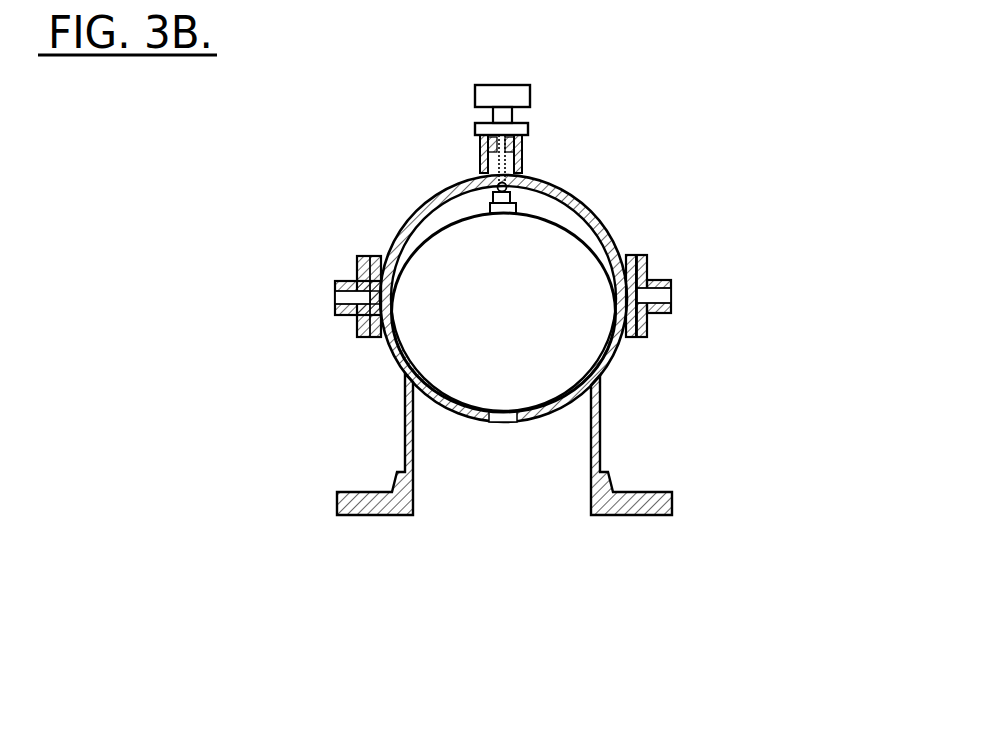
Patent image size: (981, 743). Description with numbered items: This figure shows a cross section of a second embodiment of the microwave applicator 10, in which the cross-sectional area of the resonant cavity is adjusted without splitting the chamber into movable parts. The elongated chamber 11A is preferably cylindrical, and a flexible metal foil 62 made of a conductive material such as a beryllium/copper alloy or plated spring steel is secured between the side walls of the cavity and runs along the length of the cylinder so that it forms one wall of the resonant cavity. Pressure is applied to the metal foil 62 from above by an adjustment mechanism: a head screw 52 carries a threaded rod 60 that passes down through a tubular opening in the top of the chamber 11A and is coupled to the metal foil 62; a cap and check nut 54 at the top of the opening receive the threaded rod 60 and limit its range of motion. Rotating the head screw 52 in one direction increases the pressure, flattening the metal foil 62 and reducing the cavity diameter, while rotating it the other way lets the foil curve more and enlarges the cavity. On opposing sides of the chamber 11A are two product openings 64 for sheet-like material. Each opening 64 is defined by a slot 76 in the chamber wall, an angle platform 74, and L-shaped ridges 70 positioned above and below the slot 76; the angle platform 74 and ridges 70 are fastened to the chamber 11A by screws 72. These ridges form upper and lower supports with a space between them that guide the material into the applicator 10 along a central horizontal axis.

The applicator 10 is at (577, 64).
The elongated chamber 11A is at (420, 197).
The head screw 52 is at (531, 98).
The collar 54 is at (529, 131).
The threaded rod 60 is at (523, 168).
The metal foil 62 is at (588, 237).
The product opening 64 is at (333, 295).
The L-shaped ridge 70 is at (670, 281).
The screw 72 is at (647, 324).
The angle platform 74 is at (636, 336).
The slot 76 is at (672, 299).